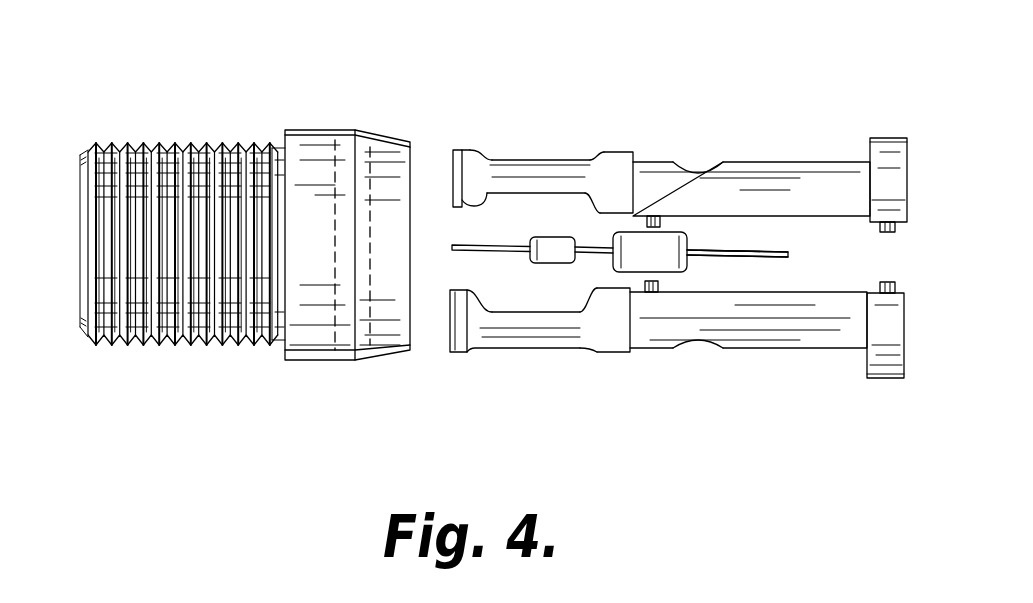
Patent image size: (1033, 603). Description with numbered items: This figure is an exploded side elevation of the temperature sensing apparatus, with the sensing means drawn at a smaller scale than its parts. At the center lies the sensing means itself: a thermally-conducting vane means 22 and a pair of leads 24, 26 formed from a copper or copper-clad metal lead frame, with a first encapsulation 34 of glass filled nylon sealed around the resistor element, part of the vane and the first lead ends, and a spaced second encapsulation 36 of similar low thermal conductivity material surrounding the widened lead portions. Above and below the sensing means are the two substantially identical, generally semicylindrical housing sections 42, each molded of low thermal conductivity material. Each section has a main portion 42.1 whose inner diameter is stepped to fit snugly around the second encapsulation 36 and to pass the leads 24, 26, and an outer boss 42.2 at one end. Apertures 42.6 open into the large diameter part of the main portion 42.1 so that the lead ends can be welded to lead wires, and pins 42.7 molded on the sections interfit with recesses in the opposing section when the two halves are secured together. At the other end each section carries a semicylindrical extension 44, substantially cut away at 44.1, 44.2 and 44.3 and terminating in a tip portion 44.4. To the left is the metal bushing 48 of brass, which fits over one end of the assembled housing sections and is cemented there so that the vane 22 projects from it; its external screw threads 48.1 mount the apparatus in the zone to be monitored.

The thermally-conducting vane means 22 is at (488, 243).
The lead 24 is at (763, 237).
The lead 26 is at (722, 242).
The first encapsulation 34 is at (560, 255).
The second encapsulation 36 is at (684, 266).
The housing section 42 is at (725, 260).
The main portion 42.1 is at (788, 185).
The outer boss 42.2 is at (888, 137).
The aperture 42.6 is at (693, 170).
The pin 42.7 is at (664, 222).
The extension 44 is at (514, 251).
The cut away portion 44.1 is at (530, 158).
The cut away portion 44.2 is at (487, 178).
The cut away portion 44.3 is at (492, 340).
The tip portion 44.4 is at (463, 297).
The metal bushing 48 is at (330, 112).
The external screw threads 48.1 is at (153, 148).